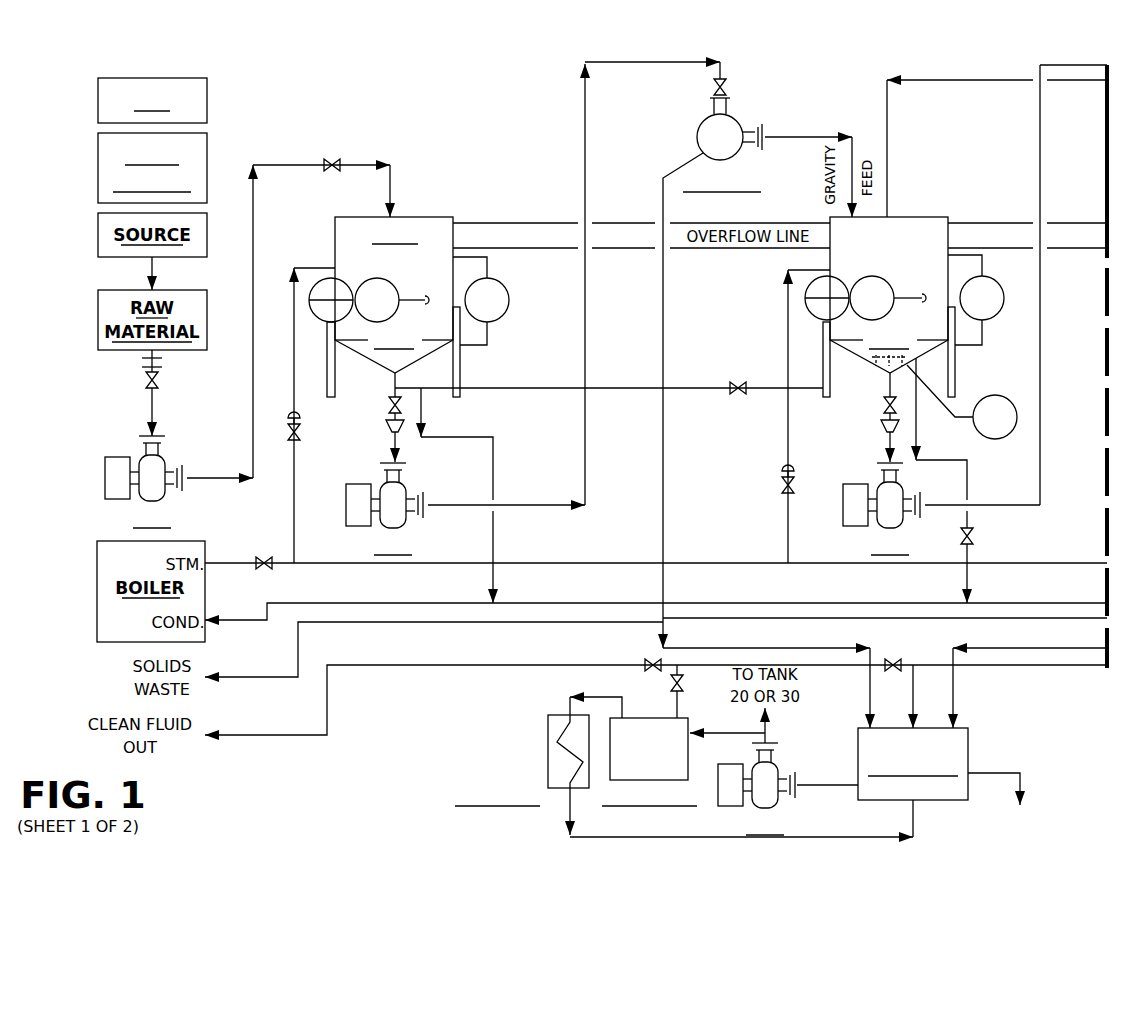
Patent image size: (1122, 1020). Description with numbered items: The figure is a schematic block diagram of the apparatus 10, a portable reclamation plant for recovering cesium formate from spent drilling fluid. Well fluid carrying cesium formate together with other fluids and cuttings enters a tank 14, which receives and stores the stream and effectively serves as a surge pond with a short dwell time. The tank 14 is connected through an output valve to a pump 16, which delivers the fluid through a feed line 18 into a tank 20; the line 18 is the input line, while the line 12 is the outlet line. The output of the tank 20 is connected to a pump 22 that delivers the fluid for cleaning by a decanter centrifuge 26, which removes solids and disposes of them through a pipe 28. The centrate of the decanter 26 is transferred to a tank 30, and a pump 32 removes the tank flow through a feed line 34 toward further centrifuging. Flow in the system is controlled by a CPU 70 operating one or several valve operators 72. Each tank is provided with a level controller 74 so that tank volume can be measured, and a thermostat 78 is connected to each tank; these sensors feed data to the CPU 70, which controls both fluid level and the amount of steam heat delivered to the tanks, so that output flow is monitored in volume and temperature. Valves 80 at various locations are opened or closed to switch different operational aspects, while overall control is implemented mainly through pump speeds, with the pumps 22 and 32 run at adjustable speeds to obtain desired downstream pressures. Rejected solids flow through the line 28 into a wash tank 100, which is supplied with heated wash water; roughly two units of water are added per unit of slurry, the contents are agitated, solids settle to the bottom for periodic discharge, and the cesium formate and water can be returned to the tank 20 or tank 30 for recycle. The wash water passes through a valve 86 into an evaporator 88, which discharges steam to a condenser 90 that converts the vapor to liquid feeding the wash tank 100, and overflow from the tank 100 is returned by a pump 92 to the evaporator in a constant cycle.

The apparatus 10 is at (260, 813).
The outlet line 12 is at (585, 128).
The tank 14 is at (178, 374).
The pump 16 is at (171, 487).
The feed line 18 is at (253, 218).
The tank 20 is at (409, 278).
The pump 22 is at (412, 504).
The decanter centrifuge 26 is at (692, 127).
The pipe 28 is at (695, 400).
The tank 30 is at (911, 298).
The pump 32 is at (921, 491).
The feed line 34 is at (1033, 122).
The CPU 70 is at (191, 94).
The valve operator 72 is at (191, 160).
The level controller 74 is at (774, 346).
The thermostat 78 is at (665, 260).
The valve 80 is at (290, 286).
The valve 86 is at (585, 688).
The evaporator 88 is at (649, 762).
The condenser 90 is at (548, 752).
The pump 92 is at (788, 780).
The wash tank 100 is at (808, 757).